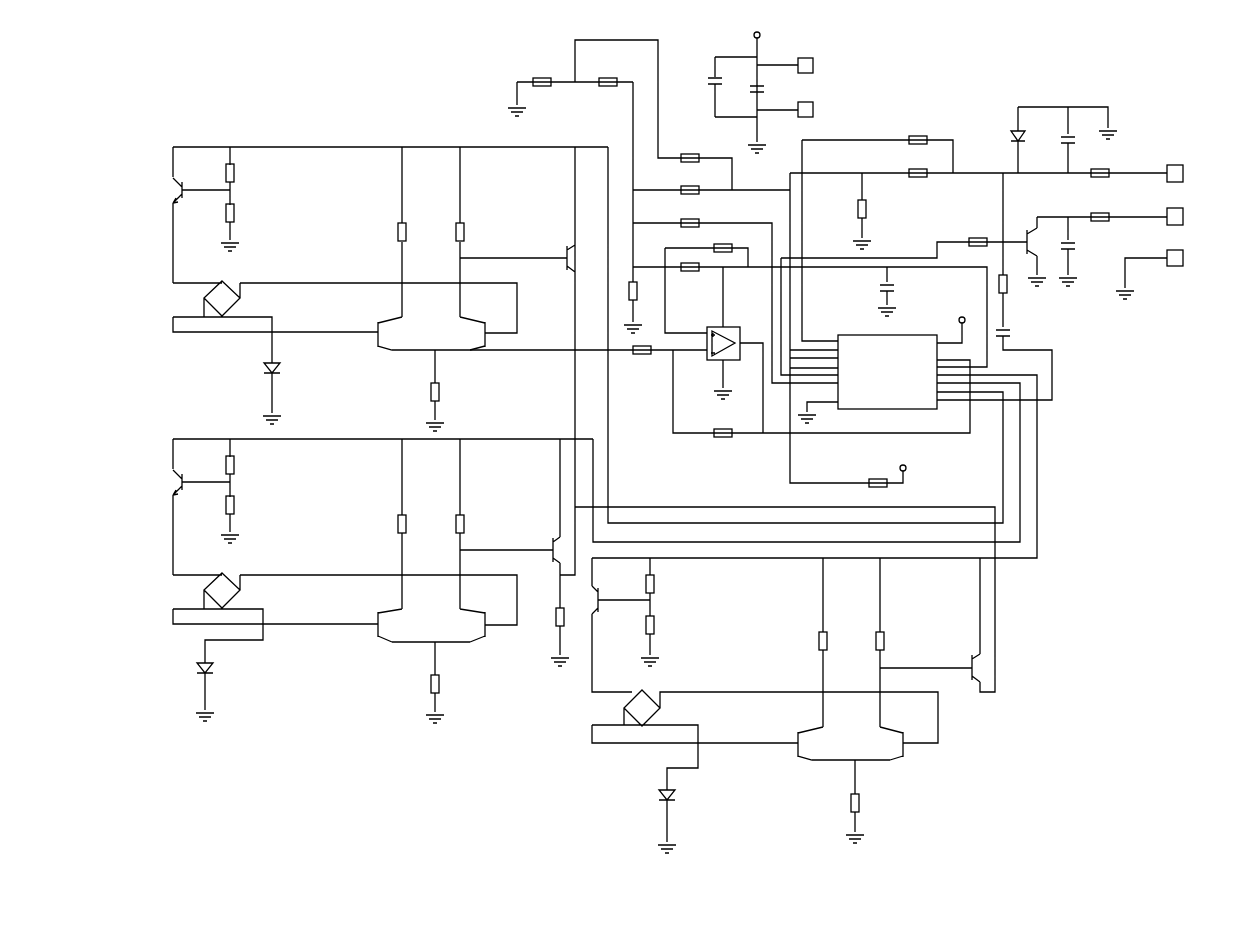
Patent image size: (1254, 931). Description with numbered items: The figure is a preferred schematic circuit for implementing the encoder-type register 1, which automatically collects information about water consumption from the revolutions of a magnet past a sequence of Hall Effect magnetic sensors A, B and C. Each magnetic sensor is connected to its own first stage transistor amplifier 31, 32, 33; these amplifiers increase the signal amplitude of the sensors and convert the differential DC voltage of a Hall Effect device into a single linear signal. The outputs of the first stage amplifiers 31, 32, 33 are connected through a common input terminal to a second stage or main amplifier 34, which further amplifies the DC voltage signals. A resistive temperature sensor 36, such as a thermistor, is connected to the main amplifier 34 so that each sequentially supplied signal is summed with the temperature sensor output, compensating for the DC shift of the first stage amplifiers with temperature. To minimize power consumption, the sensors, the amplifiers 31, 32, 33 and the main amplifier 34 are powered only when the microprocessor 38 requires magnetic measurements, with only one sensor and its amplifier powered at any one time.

The encoder-type register 1 is at (682, 434).
The first stage transistor amplifier 31 is at (417, 355).
The first stage transistor amplifier 32 is at (417, 646).
The first stage transistor amplifier 33 is at (887, 762).
The main amplifier 34 is at (712, 362).
The temperature sensor 36 is at (543, 89).
The microprocessor 38 is at (915, 409).